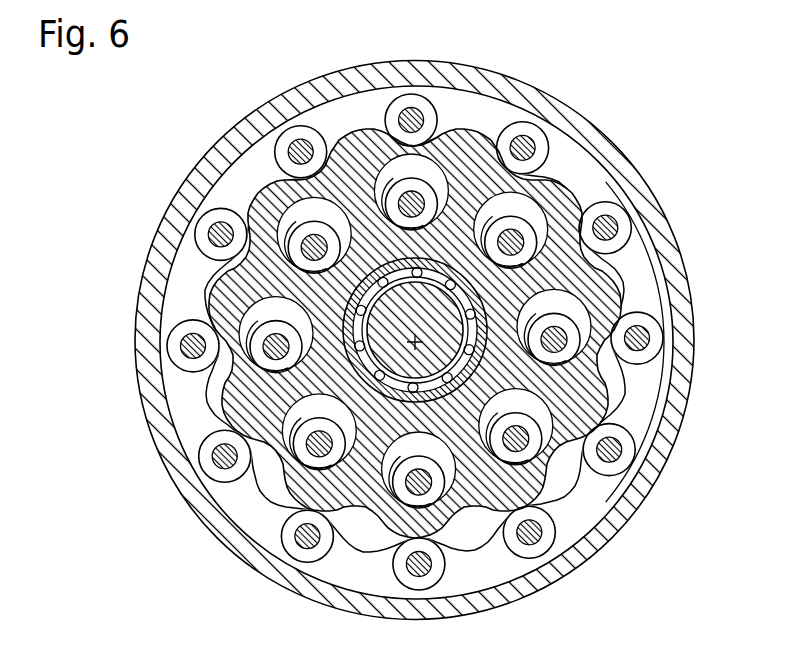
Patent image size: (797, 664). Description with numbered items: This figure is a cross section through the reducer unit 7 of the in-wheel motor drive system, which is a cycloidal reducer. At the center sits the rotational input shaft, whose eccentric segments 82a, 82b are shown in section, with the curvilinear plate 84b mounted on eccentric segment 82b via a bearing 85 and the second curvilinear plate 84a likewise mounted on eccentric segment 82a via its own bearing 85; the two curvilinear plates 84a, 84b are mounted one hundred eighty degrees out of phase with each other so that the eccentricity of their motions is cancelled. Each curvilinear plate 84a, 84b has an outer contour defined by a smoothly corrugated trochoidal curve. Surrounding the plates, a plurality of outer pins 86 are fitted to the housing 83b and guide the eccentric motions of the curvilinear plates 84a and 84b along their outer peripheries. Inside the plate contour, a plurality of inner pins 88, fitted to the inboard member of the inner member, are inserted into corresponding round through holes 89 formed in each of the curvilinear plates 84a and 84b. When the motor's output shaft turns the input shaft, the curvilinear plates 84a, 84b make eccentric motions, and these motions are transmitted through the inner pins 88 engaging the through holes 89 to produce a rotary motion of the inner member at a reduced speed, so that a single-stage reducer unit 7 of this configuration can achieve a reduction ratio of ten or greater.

The reducer unit 7 is at (219, 130).
The housing 83b is at (184, 198).
The curvilinear plate 84a is at (398, 342).
The curvilinear plate 84b is at (348, 298).
The eccentric segment 82a is at (222, 424).
The eccentric segment 82b is at (272, 393).
The bearing 85 is at (343, 291).
The outer pin 86 is at (408, 119).
The inner pin 88 is at (509, 236).
The through hole 89 is at (590, 302).